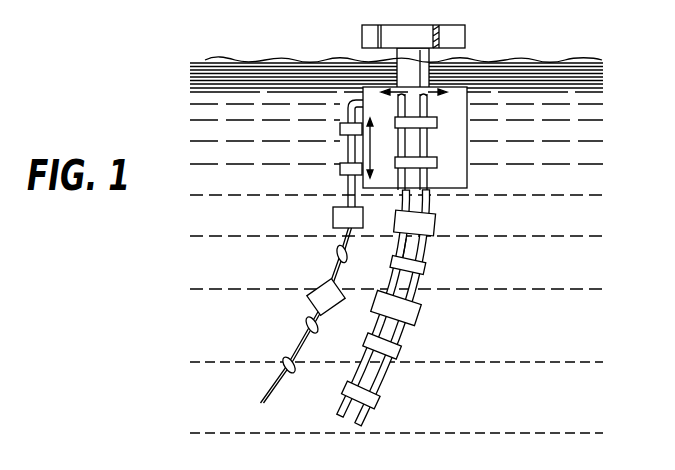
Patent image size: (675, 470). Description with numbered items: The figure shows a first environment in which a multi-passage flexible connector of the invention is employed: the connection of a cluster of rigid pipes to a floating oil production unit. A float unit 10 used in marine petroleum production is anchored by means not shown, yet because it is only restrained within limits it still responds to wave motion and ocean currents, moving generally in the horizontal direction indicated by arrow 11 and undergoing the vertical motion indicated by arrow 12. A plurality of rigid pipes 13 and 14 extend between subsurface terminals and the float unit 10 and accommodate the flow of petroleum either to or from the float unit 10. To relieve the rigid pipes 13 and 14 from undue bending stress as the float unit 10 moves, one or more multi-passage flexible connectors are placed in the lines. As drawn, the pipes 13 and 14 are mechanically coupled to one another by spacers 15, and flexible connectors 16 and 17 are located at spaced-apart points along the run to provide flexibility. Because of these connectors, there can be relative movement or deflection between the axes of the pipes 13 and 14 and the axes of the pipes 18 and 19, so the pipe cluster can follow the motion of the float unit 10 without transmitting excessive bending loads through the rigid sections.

The float unit 10 is at (458, 176).
The arrow 11 is at (438, 93).
The arrow 12 is at (375, 147).
The rigid pipe 13 is at (343, 406).
The rigid pipe 14 is at (363, 415).
The spacers 15 is at (382, 397).
The flexible connector 16 is at (412, 312).
The flexible connector 17 is at (428, 230).
The pipe 18 is at (402, 248).
The pipe 19 is at (426, 253).